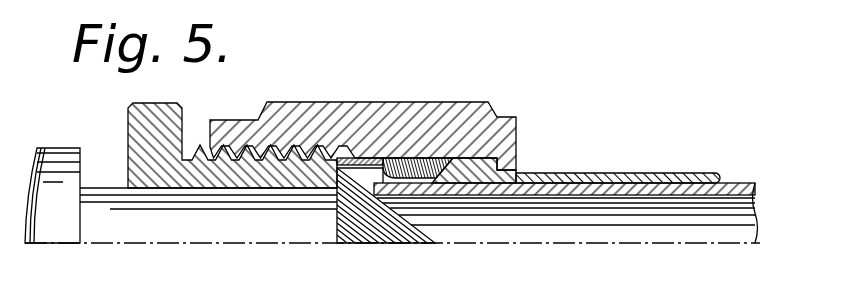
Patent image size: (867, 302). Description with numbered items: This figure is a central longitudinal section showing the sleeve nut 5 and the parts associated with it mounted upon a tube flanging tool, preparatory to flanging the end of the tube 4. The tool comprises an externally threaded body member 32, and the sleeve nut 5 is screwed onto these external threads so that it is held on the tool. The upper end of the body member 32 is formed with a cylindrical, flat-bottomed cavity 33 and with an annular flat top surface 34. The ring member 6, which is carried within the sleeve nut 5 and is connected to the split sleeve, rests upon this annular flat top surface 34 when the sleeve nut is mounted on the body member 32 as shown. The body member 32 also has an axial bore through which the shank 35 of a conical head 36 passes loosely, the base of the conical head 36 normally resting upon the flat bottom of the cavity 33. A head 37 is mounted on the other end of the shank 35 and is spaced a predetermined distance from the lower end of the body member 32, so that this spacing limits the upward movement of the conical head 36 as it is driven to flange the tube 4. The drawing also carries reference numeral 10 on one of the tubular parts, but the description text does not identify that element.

The tube 4 is at (733, 183).
The sleeve nut 5 is at (495, 110).
The ring member 6 is at (438, 158).
The inner tube 10 is at (638, 154).
The body member 32 is at (137, 123).
The cavity 33 is at (360, 160).
The annular flat top surface 34 is at (417, 163).
The shank 35 is at (168, 233).
The conical head 36 is at (373, 232).
The head 37 is at (62, 233).